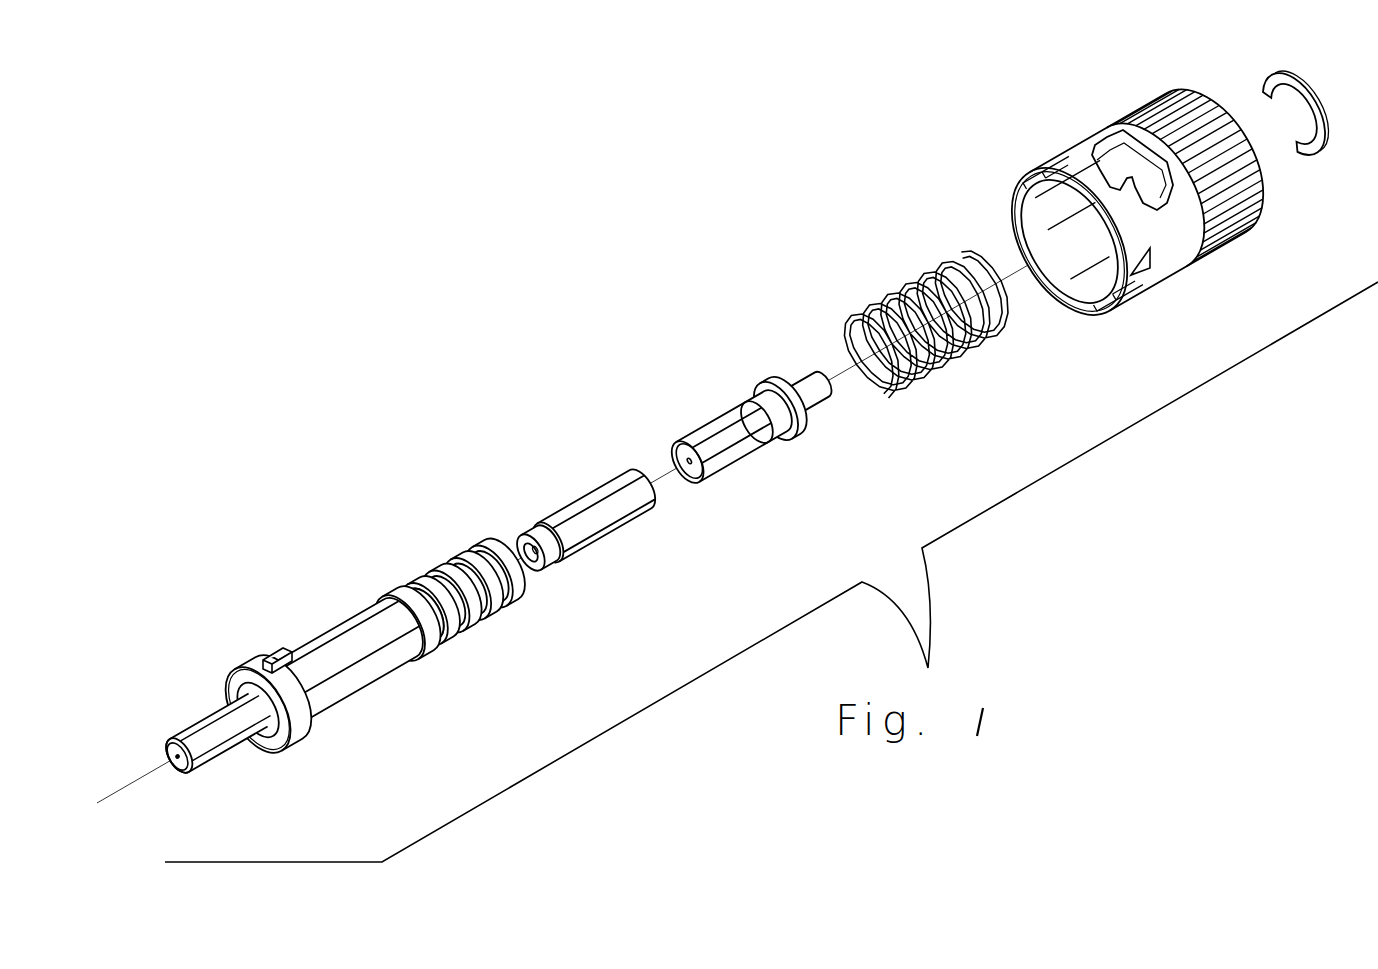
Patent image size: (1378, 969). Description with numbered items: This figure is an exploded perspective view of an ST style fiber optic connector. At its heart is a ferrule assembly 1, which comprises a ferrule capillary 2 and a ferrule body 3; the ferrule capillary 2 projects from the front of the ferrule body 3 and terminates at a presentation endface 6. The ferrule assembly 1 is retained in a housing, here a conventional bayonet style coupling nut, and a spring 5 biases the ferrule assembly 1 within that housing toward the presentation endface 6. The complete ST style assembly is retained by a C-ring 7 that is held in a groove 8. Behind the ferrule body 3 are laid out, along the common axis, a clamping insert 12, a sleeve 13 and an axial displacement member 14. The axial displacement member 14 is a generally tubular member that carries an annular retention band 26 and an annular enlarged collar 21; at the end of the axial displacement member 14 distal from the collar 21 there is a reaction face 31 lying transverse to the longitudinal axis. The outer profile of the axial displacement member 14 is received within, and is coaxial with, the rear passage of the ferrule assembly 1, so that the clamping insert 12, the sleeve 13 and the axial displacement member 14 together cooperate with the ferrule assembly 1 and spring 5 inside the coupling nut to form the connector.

The ferrule assembly 1 is at (719, 449).
The ferrule capillary 2 is at (198, 778).
The ferrule body 3 is at (360, 667).
The spring 5 is at (933, 287).
The presentation endface 6 is at (168, 767).
The C-ring 7 is at (1283, 73).
The groove 8 is at (400, 586).
The clamping insert 12 is at (545, 533).
The sleeve 13 is at (610, 510).
The axial displacement member 14 is at (748, 437).
The annular enlarged collar 21 is at (778, 378).
The annular retention band 26 is at (768, 433).
The reaction face 31 is at (687, 477).